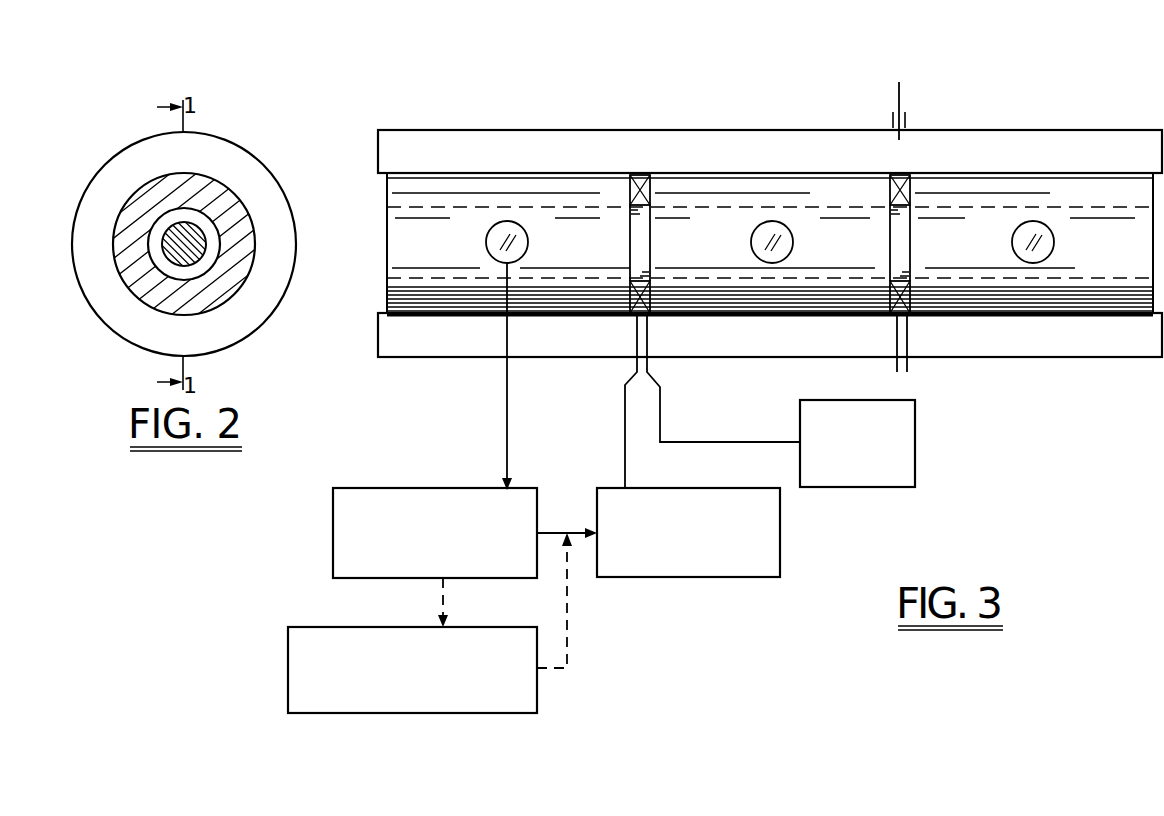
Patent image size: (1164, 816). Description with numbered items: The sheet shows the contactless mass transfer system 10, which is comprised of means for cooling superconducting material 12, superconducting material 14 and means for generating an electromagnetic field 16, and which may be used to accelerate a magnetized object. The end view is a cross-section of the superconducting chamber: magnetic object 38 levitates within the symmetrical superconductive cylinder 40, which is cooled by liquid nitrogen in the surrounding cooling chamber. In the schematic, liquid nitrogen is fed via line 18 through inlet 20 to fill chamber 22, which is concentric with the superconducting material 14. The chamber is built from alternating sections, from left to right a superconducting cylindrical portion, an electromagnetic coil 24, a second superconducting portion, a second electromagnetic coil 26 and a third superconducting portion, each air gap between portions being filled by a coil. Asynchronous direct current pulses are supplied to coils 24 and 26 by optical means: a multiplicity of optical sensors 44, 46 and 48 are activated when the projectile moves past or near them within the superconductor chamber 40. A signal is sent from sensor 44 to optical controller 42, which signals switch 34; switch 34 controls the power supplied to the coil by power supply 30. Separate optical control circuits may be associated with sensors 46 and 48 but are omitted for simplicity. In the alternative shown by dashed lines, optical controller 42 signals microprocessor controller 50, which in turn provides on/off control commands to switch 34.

In FIG. 3, the contactless mass transfer system 10 is at (613, 78).
In FIG. 3, the means for cooling superconducting material 12 is at (957, 138).
In FIG. 3, the superconducting material 14 is at (1062, 197).
In FIG. 3, the means for generating an electromagnetic field 16 is at (896, 172).
In FIG. 3, the line 18 is at (901, 97).
In FIG. 3, the inlet 20 is at (893, 121).
In FIG. 3, the chamber 22 is at (1008, 143).
In FIG. 3, the electromagnetic coil 24 is at (652, 313).
In FIG. 3, the second electromagnetic coil 26 is at (905, 315).
In FIG. 3, the power supply 30 is at (916, 447).
In FIG. 3, the switch 34 is at (782, 533).
In FIG. 2, the magnetic object 38 is at (187, 225).
In FIG. 2, the symmetrical superconductive cylinder 40 is at (153, 177).
In FIG. 3, the optical controller 42 is at (333, 530).
In FIG. 3, the optical sensor 44 is at (517, 247).
In FIG. 3, the optical sensor 46 is at (783, 243).
In FIG. 3, the optical sensor 48 is at (1047, 243).
In FIG. 3, the microprocessor controller 50 is at (537, 688).